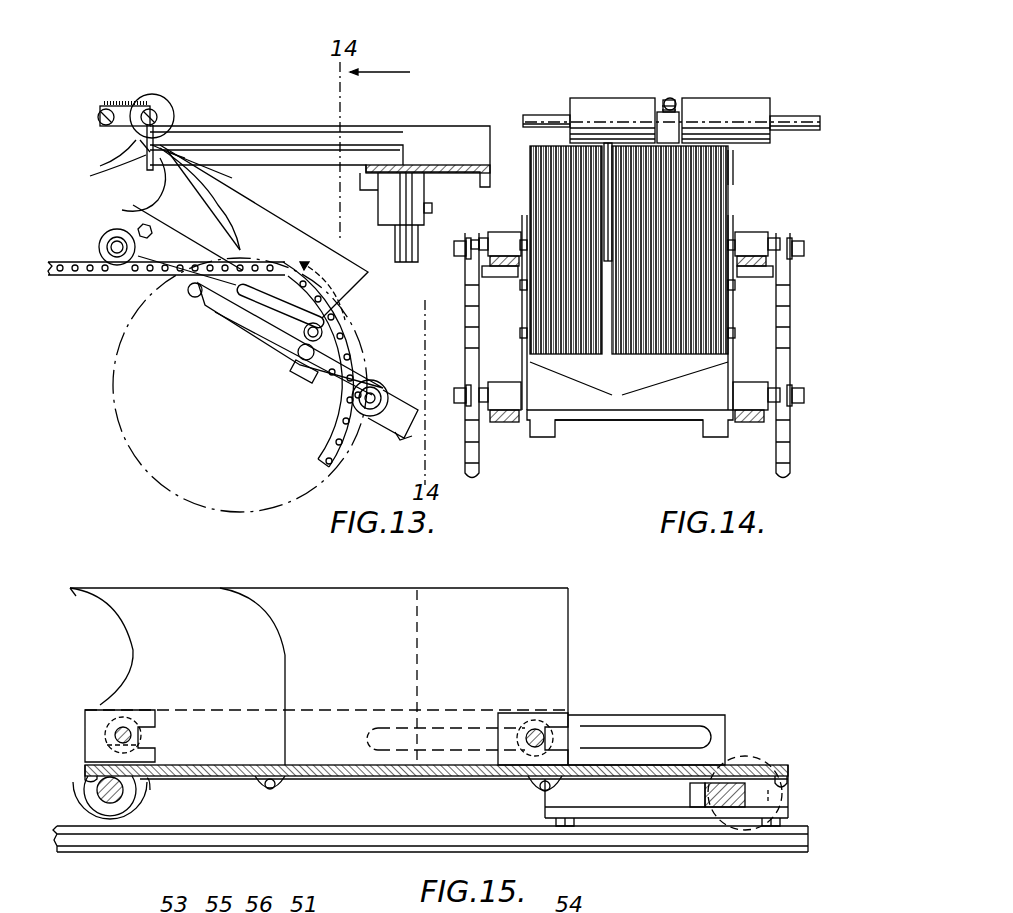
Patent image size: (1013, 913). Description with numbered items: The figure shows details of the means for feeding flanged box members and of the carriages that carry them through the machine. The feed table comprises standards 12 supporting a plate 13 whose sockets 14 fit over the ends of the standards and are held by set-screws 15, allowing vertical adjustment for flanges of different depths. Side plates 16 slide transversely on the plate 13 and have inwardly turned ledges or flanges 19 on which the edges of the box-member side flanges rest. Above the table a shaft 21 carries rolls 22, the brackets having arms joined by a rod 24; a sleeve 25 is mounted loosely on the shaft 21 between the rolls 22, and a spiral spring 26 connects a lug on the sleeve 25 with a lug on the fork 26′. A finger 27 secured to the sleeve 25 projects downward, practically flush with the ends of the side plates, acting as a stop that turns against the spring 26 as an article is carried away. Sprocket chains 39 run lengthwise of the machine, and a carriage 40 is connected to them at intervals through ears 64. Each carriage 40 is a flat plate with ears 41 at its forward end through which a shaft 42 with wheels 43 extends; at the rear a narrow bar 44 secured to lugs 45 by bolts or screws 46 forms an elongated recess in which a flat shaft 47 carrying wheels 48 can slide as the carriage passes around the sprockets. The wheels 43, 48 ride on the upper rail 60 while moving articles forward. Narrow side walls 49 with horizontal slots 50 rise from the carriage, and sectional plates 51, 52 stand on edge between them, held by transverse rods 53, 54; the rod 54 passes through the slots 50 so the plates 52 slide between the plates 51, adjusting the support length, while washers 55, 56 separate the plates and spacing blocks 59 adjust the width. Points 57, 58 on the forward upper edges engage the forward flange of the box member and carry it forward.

In FIG. 13, the standards 12 is at (392, 238).
In FIG. 13, the plate 13 is at (420, 165).
In FIG. 13, the sockets 14 is at (384, 212).
In FIG. 13, the set-screws 15 is at (433, 208).
In FIG. 13, the side plates 16 is at (286, 130).
In FIG. 14, the side plates 16 is at (556, 118).
In FIG. 13, the ledges or flanges 19 is at (320, 148).
In FIG. 14, the ledges or flanges 19 is at (734, 172).
In FIG. 13, the shaft 21 is at (153, 110).
In FIG. 14, the shaft 21 is at (606, 140).
In FIG. 13, the rolls 22 is at (142, 120).
In FIG. 14, the rolls 22 is at (590, 100).
In FIG. 13, the rod 24 is at (112, 120).
In FIG. 13, the sleeve 25 is at (164, 114).
In FIG. 13, the spiral spring 26 is at (135, 107).
In FIG. 13, the fork 26′ is at (143, 142).
In FIG. 14, the fork 26′ is at (670, 112).
In FIG. 13, the finger 27 is at (150, 158).
In FIG. 14, the finger 27 is at (676, 128).
In FIG. 13, the sprocket chains 39 is at (345, 365).
In FIG. 14, the sprocket chains 39 is at (470, 272).
In FIG. 13, the carriage 40 is at (238, 300).
In FIG. 14, the carriage 40 is at (590, 422).
In FIG. 15, the carriage 40 is at (742, 775).
In FIG. 15, the ears 41 is at (133, 798).
In FIG. 13, the shaft 42 is at (113, 244).
In FIG. 14, the shaft 42 is at (472, 244).
In FIG. 15, the shaft 42 is at (118, 800).
In FIG. 13, the wheels 43 is at (111, 258).
In FIG. 14, the wheels 43 is at (516, 236).
In FIG. 15, the wheels 43 is at (125, 824).
In FIG. 13, the narrow bar 44 is at (392, 402).
In FIG. 14, the narrow bar 44 is at (546, 438).
In FIG. 15, the narrow bar 44 is at (665, 812).
In FIG. 13, the lugs 45 is at (300, 362).
In FIG. 15, the lugs 45 is at (530, 788).
In FIG. 13, the bolts or screws 46 is at (330, 372).
In FIG. 15, the bolts or screws 46 is at (566, 828).
In FIG. 13, the shaft 47 is at (366, 404).
In FIG. 15, the shaft 47 is at (712, 797).
In FIG. 14, the wheels 48 is at (757, 390).
In FIG. 15, the wheels 48 is at (728, 826).
In FIG. 13, the side walls 49 is at (252, 316).
In FIG. 14, the side walls 49 is at (629, 385).
In FIG. 15, the side walls 49 is at (582, 724).
In FIG. 13, the horizontal slots 50 is at (262, 292).
In FIG. 15, the horizontal slots 50 is at (587, 742).
In FIG. 13, the sectional plates 51 is at (170, 186).
In FIG. 14, the sectional plates 51 is at (607, 216).
In FIG. 15, the sectional plates 51 is at (147, 602).
In FIG. 13, the sectional plates 52 is at (262, 226).
In FIG. 14, the sectional plates 52 is at (612, 196).
In FIG. 15, the sectional plates 52 is at (320, 600).
In FIG. 13, the transverse rod 53 is at (118, 240).
In FIG. 15, the transverse rod 53 is at (110, 742).
In FIG. 13, the transverse rod 54 is at (306, 332).
In FIG. 15, the transverse rod 54 is at (538, 738).
In FIG. 15, the washer 55 is at (121, 732).
In FIG. 14, the washers 56 is at (522, 322).
In FIG. 13, the points 57 is at (166, 150).
In FIG. 15, the points 57 is at (73, 590).
In FIG. 13, the points 58 is at (233, 176).
In FIG. 15, the points 58 is at (223, 590).
In FIG. 14, the spacing blocks 59 is at (640, 218).
In FIG. 15, the spacing blocks 59 is at (138, 722).
In FIG. 13, the upper horizontal track or rail 60 is at (116, 266).
In FIG. 14, the upper horizontal track or rail 60 is at (484, 278).
In FIG. 15, the upper horizontal track or rail 60 is at (262, 838).
In FIG. 13, the ears 64 is at (122, 262).
In FIG. 14, the ears 64 is at (797, 244).